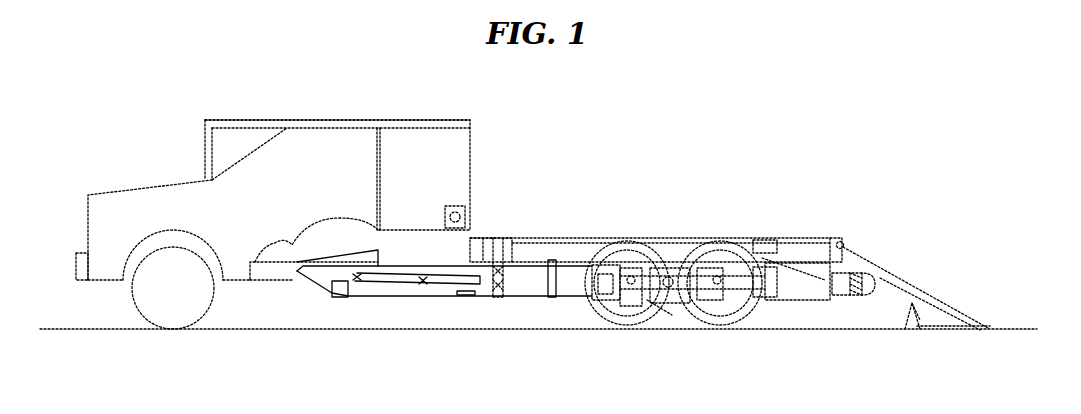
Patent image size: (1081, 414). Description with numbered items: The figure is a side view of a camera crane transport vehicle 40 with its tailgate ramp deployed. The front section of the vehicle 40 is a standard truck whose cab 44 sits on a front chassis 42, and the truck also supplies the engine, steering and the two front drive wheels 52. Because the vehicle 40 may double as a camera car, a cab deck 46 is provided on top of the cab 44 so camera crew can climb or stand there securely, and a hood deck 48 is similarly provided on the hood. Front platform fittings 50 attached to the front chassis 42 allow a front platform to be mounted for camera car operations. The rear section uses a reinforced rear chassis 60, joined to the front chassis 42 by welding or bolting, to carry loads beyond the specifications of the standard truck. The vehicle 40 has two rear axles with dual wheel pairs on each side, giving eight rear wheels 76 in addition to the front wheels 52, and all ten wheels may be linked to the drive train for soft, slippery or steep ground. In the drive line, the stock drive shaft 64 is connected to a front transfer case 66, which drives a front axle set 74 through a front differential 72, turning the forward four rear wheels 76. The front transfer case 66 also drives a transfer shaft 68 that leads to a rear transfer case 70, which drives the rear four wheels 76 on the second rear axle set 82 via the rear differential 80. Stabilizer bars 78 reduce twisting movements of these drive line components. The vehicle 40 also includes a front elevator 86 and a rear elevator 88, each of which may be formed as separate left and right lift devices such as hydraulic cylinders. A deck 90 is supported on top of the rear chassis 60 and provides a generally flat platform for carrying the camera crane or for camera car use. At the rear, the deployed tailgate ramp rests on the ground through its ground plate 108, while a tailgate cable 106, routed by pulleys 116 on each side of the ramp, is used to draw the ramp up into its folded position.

The camera crane transport vehicle 40 is at (485, 103).
The front chassis 42 is at (280, 273).
The cab 44 is at (335, 142).
The cab deck 46 is at (240, 125).
The hood deck 48 is at (133, 188).
The front platform fittings 50 is at (77, 267).
The front drive wheels 52 is at (153, 327).
The rear chassis 60 is at (393, 287).
The drive shaft 64 is at (443, 283).
The front transfer case 66 is at (600, 303).
The transfer shaft 68 is at (647, 273).
The rear transfer case 70 is at (712, 270).
The front differential 72 is at (655, 300).
The front axle set 74 is at (627, 300).
The rear wheels 76 is at (632, 320).
The stabilizer bars 78 is at (747, 243).
The rear differential 80 is at (730, 303).
The second rear axle set 82 is at (713, 303).
The front elevator 86 is at (497, 277).
The rear elevator 88 is at (862, 272).
The deck 90 is at (583, 238).
The tailgate cable 106 is at (893, 275).
The ground plate 108 is at (950, 332).
The pulleys 116 is at (843, 240).